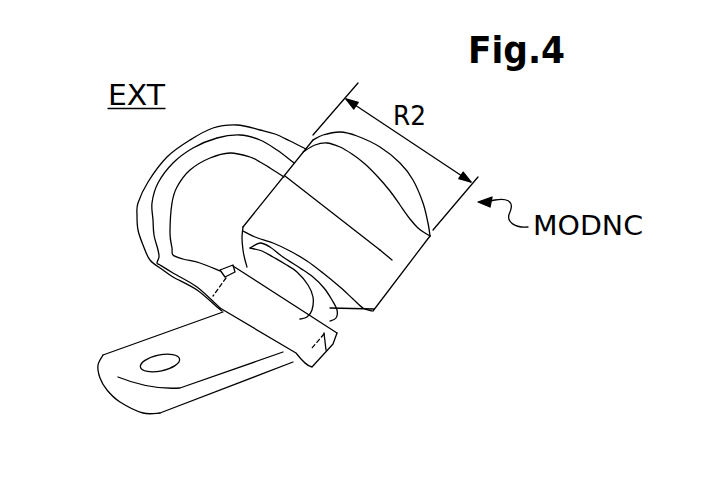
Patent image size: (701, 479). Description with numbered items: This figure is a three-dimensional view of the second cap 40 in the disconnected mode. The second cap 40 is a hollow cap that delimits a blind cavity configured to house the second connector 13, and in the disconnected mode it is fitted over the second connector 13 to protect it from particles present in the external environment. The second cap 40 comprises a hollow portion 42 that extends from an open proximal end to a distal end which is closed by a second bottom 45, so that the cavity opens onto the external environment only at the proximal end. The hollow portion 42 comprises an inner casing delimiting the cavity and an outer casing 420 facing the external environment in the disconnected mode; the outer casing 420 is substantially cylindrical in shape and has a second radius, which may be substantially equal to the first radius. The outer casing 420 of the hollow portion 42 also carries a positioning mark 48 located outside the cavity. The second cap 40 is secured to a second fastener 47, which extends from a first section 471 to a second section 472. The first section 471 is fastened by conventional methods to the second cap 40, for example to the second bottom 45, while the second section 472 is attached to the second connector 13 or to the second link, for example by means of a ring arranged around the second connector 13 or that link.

The second cap 40 is at (106, 264).
The second fastener 47 is at (152, 190).
The first section 471 is at (295, 148).
The second section 472 is at (328, 347).
The hollow portion 42 is at (412, 238).
The outer casing 420 is at (334, 187).
The second bottom 45 is at (413, 200).
The positioning mark 48 is at (392, 260).
The second connector 13 is at (372, 310).